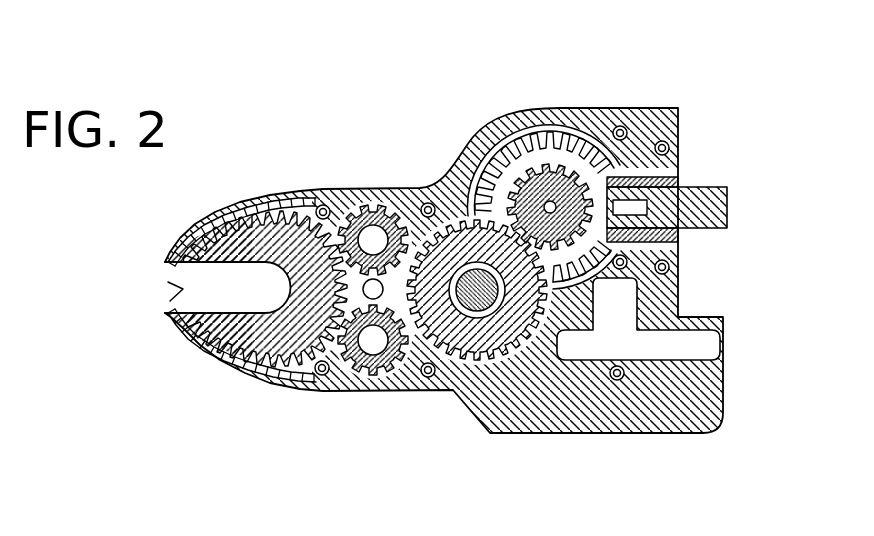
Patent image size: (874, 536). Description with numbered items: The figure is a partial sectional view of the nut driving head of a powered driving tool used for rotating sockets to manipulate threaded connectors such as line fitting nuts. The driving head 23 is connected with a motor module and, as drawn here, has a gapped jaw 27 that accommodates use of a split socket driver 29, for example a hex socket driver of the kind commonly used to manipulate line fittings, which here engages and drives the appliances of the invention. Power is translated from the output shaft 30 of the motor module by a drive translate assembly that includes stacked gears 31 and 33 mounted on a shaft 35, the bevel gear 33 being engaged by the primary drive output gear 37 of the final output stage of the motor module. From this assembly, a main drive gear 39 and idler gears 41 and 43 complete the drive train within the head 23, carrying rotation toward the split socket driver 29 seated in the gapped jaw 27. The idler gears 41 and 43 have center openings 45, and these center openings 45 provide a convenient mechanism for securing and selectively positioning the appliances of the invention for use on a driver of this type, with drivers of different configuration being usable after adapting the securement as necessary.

The driving head 23 is at (610, 110).
The gapped jaw 27 is at (183, 289).
The split socket driver 29 is at (213, 262).
The output shaft 30 is at (680, 210).
The stacked gear 31 is at (540, 178).
The bevel gear 33 is at (477, 162).
The shaft 35 is at (551, 205).
The primary drive output gear 37 is at (613, 172).
The main drive gear 39 is at (474, 318).
The idler gear 41 is at (362, 227).
The idler gear 43 is at (368, 364).
The center openings 45 is at (372, 240).